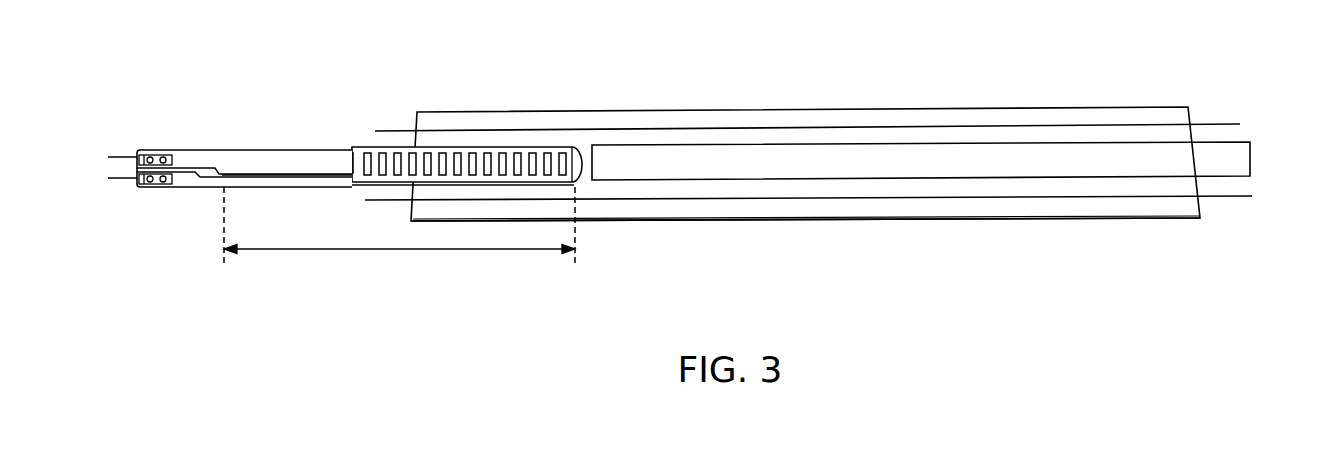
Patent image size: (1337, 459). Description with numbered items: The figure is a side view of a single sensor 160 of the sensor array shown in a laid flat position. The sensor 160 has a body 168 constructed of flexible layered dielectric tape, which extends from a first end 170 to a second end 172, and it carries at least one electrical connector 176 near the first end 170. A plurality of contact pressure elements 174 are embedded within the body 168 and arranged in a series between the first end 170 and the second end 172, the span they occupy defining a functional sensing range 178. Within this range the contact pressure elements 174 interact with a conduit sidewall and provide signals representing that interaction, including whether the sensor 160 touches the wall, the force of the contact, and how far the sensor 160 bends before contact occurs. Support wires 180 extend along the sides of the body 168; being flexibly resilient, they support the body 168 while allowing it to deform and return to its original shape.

The sensor 160 is at (990, 100).
The body 168 is at (893, 216).
The first end 170 is at (136, 190).
The second end 172 is at (1235, 159).
The contact pressure elements 174 is at (381, 158).
The electrical connector 176 is at (126, 172).
The functional sensing range 178 is at (396, 250).
The support wires 180 is at (1243, 196).